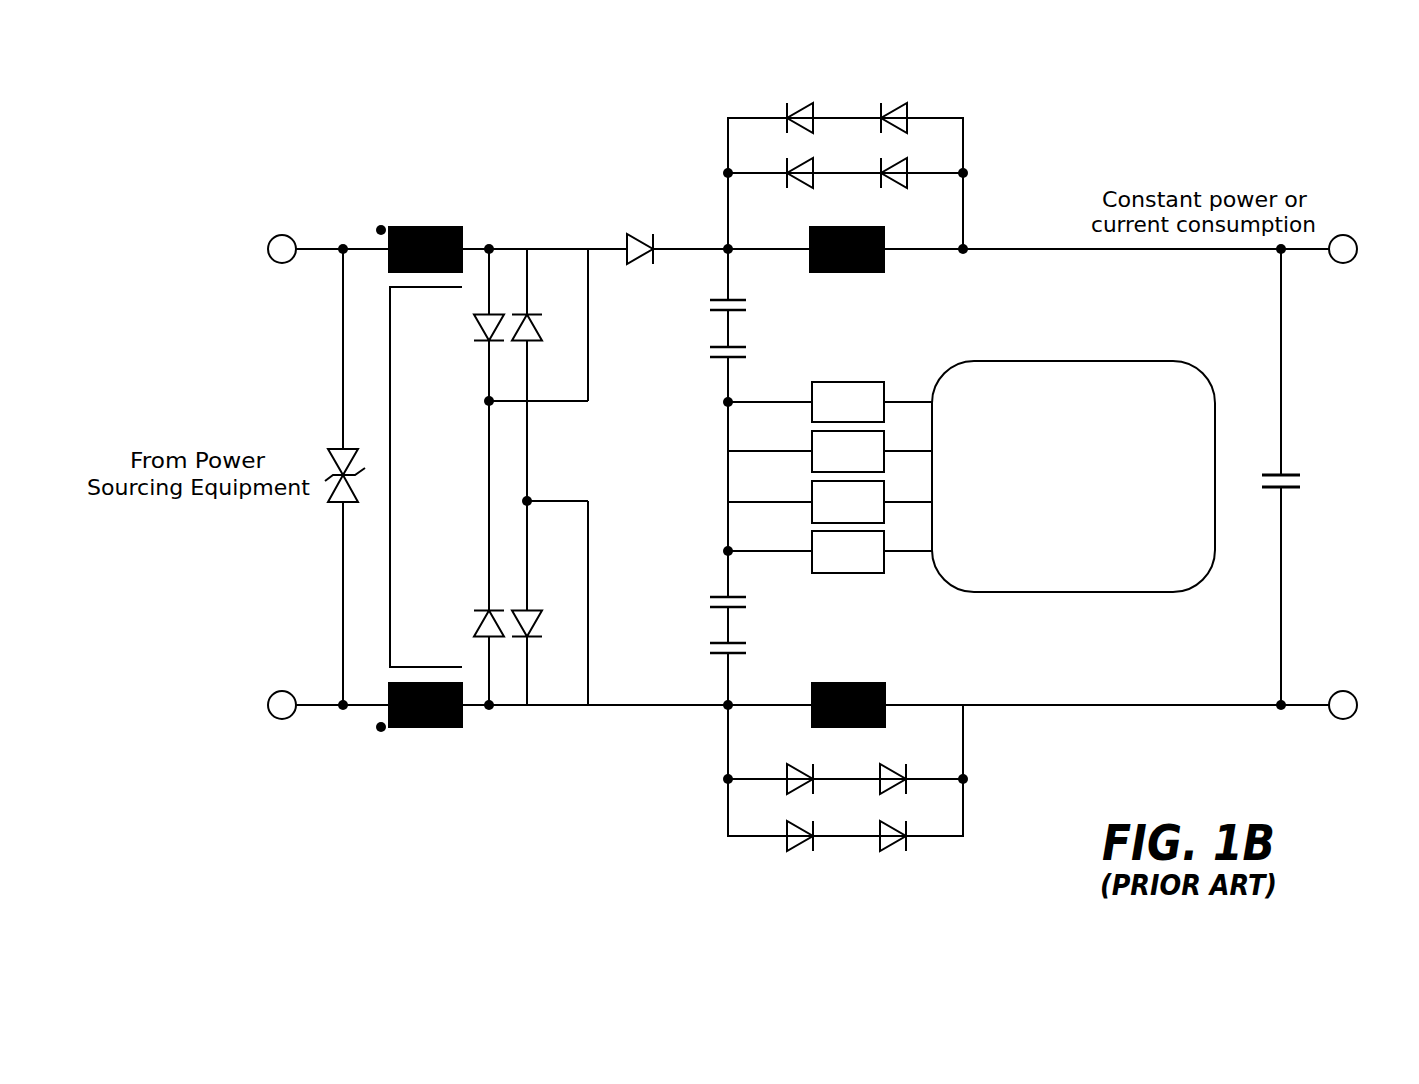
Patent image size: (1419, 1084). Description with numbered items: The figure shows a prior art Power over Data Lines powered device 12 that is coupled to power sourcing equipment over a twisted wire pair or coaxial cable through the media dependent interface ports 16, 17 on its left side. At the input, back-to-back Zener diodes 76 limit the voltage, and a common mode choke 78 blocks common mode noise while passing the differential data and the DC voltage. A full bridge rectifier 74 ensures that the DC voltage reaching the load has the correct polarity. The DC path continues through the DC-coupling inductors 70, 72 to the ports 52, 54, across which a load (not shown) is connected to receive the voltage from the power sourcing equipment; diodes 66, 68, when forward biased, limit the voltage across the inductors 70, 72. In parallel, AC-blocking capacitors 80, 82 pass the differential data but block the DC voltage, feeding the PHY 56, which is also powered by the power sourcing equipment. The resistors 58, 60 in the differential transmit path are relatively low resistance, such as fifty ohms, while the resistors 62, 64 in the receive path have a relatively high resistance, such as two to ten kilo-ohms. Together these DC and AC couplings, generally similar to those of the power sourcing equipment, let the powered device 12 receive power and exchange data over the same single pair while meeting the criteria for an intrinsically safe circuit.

The powered device 12 is at (530, 148).
The media dependent interface port 16 is at (282, 264).
The media dependent interface port 17 is at (282, 690).
The port 52 is at (1354, 262).
The port 54 is at (1342, 690).
The PHY 56 is at (1107, 361).
The resistor 58 is at (812, 382).
The resistor 60 is at (812, 565).
The resistor 62 is at (812, 440).
The resistor 64 is at (812, 508).
The diodes 66 is at (712, 136).
The diodes 68 is at (713, 859).
The DC-coupling inductor 70 is at (884, 262).
The DC-coupling inductor 72 is at (885, 692).
The full bridge rectifier 74 is at (477, 353).
The back-to-back Zener diodes 76 is at (336, 502).
The CMC 78 is at (400, 549).
The AC-blocking capacitor 80 is at (719, 342).
The AC-blocking capacitor 82 is at (719, 605).